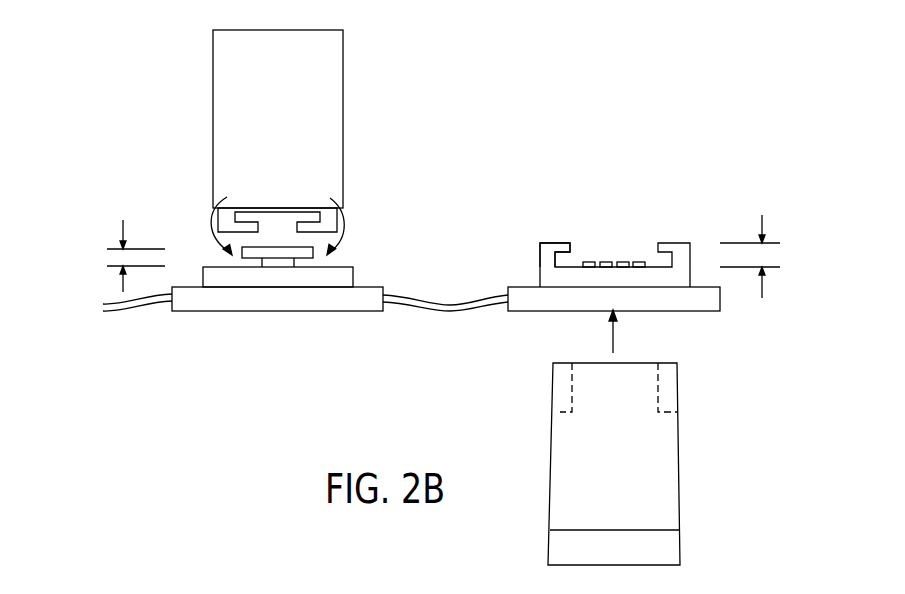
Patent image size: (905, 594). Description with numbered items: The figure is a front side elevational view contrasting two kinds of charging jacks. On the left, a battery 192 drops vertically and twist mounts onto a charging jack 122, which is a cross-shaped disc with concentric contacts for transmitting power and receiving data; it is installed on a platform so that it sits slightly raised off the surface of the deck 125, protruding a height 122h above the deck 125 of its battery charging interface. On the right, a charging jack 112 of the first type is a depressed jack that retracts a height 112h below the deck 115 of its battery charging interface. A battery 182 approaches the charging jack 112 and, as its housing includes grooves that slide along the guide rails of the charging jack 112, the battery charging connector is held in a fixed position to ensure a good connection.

The battery 192 is at (296, 130).
The charging jack 122 is at (258, 247).
The deck 125 is at (344, 267).
The height 122h is at (118, 257).
The charging jack 112 is at (679, 220).
The deck 115 is at (552, 243).
The height 112h is at (770, 257).
The battery 182 is at (652, 468).